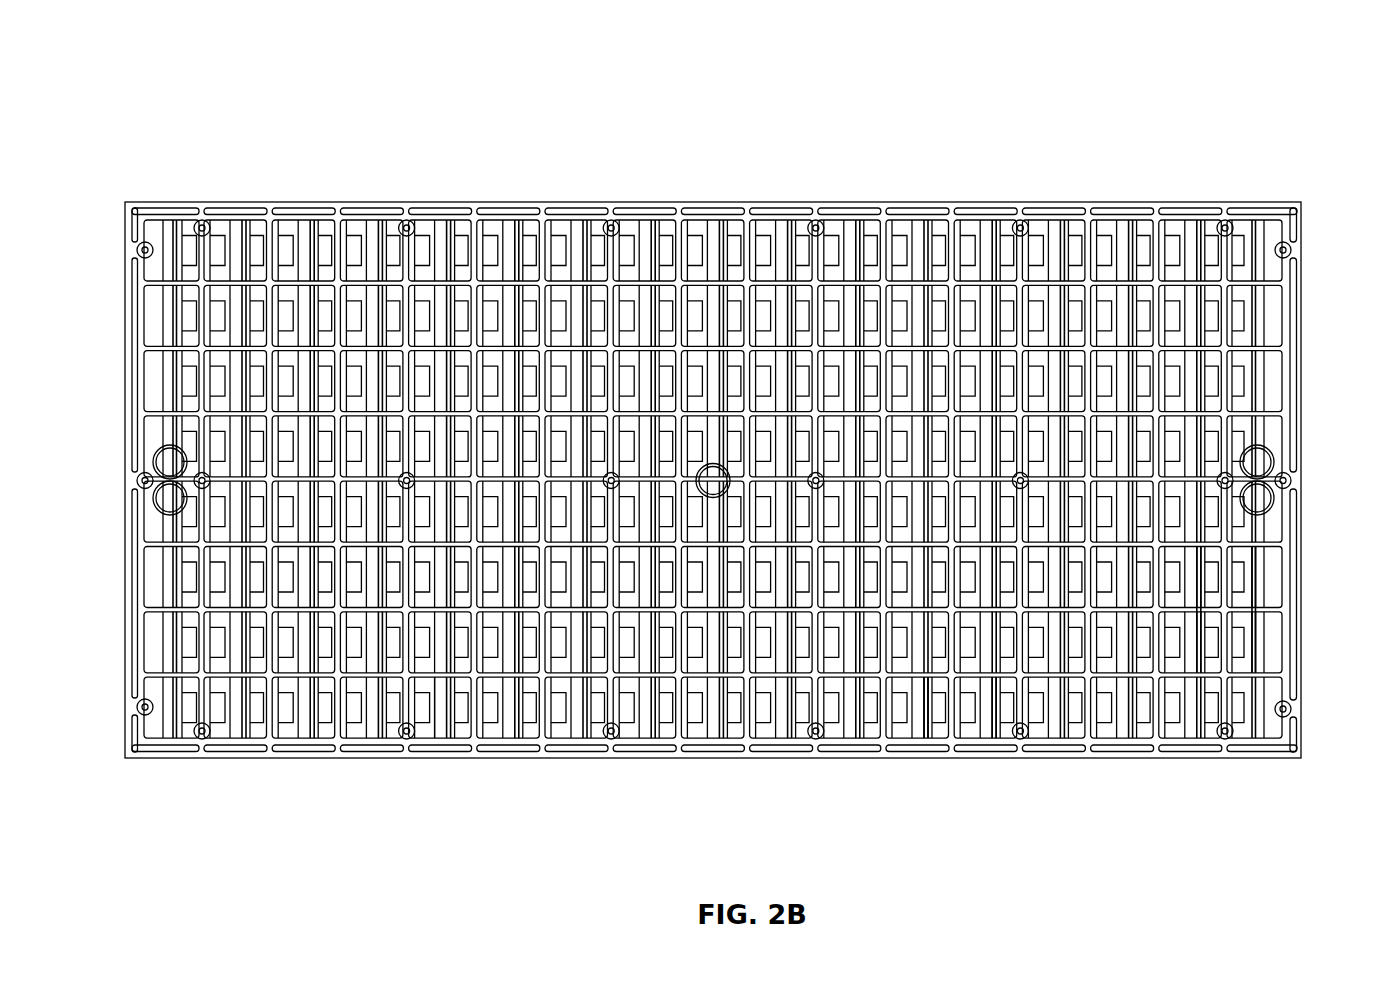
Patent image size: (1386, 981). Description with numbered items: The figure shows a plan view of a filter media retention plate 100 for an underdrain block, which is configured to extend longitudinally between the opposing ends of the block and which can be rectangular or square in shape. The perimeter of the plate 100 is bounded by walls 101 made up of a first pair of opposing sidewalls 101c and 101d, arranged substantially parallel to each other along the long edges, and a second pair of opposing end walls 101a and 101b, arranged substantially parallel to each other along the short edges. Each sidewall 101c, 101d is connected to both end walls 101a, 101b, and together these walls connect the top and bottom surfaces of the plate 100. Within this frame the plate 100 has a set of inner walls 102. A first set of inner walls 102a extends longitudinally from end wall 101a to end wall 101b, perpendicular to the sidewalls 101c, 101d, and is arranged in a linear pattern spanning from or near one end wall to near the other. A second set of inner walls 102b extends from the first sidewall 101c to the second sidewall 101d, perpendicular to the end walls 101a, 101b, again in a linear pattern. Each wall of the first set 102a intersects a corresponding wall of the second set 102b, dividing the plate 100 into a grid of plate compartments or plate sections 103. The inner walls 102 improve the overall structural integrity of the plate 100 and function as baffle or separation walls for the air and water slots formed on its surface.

The media retention plate 100 is at (1177, 63).
The sidewalls and end walls 101 is at (458, 208).
The end wall 101a is at (130, 412).
The end wall 101b is at (1298, 393).
The sidewall 101c is at (334, 208).
The sidewall 101d is at (345, 753).
The set of inner walls 102 is at (190, 492).
The first set of inner walls 102a is at (948, 708).
The second set of inner walls 102b is at (1193, 543).
The plate compartments 103 is at (434, 708).